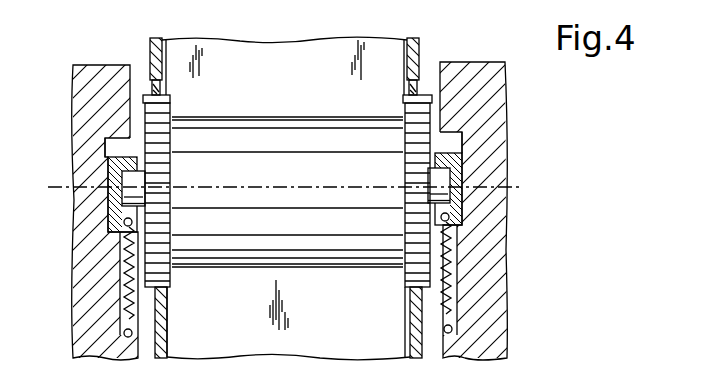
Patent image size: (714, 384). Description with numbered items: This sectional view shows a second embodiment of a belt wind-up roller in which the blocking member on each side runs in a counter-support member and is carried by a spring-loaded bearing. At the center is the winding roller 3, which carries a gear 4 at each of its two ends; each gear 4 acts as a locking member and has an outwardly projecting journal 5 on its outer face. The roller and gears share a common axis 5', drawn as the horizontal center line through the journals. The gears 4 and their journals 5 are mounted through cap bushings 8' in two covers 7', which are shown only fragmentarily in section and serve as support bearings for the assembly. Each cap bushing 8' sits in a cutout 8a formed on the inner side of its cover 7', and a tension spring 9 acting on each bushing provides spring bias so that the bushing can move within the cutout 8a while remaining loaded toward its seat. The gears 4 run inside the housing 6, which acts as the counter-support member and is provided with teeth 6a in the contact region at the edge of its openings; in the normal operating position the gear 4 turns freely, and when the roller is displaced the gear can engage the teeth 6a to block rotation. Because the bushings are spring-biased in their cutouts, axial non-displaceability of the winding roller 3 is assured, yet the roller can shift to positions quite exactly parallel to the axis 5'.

The winding roller 3 is at (262, 132).
The gear 4 is at (141, 98).
The journal 5 is at (245, 172).
The axis 5' is at (286, 183).
The housing 6 is at (270, 48).
The teeth 6a is at (160, 88).
The covers 7' is at (295, 211).
The cap bushings 8' is at (326, 181).
The cutout 8a is at (104, 148).
The tension springs 9 is at (135, 300).